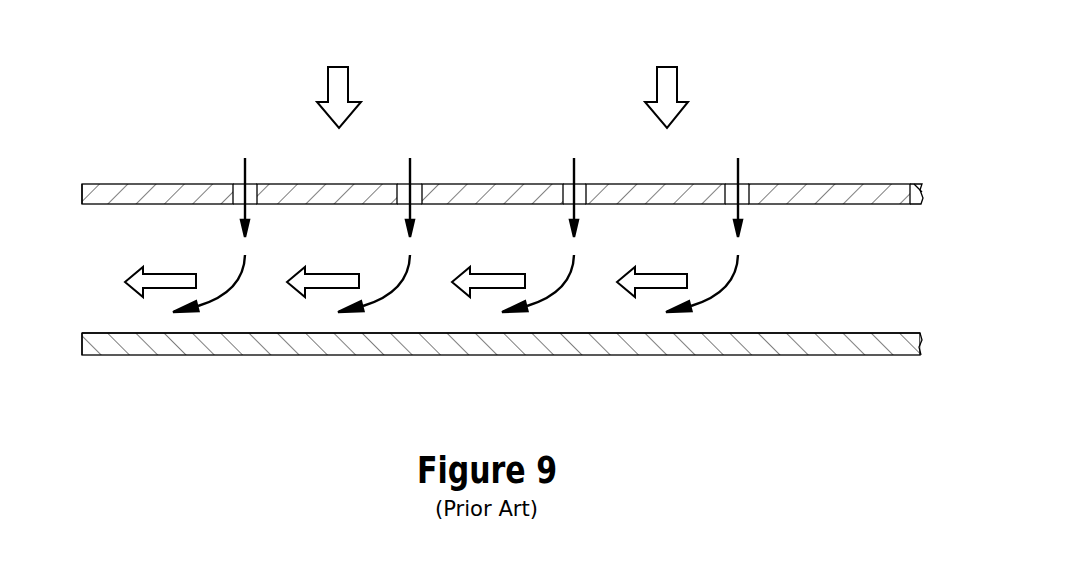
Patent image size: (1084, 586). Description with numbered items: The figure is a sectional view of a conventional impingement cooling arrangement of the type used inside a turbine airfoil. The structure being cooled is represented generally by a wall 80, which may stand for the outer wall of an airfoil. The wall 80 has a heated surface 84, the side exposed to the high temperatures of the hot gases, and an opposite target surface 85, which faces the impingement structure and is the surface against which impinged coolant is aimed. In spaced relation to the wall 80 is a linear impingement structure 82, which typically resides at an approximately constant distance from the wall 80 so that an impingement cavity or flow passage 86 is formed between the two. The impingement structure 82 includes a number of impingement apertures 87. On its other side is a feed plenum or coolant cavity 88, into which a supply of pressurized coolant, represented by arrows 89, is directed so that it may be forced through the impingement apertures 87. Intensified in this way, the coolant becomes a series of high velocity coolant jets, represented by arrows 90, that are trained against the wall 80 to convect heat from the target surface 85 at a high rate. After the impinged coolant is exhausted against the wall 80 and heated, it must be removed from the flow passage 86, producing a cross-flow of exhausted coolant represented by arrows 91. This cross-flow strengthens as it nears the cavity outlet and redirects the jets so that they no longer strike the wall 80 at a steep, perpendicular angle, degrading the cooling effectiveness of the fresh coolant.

The wall 80 is at (170, 333).
The impingement structure 82 is at (797, 186).
The heated surface 84 is at (756, 356).
The target surface 85 is at (852, 332).
The impingement cavity or flow passage 86 is at (296, 248).
The impingement apertures 87 is at (236, 188).
The feed plenum or coolant cavity 88 is at (310, 148).
The arrows representing flow of coolant supply 89 is at (348, 85).
The arrows representing flow of coolant jets 90 is at (238, 280).
The arrows representing cross-flow of exhausted coolant 91 is at (164, 273).